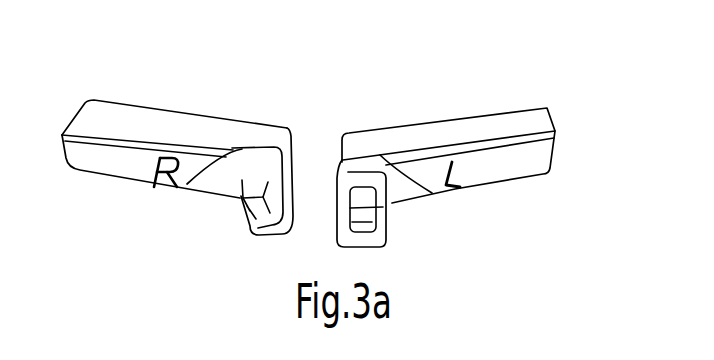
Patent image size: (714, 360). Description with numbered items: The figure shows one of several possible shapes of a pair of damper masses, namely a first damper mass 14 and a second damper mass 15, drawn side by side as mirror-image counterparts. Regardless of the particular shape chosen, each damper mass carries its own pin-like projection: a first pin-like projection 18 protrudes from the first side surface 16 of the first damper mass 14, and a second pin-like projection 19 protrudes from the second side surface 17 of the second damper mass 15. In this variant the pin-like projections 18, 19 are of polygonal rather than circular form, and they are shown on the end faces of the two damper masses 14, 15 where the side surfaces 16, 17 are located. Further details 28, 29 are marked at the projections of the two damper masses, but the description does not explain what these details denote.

The first damper mass 14 is at (488, 127).
The second damper mass 15 is at (130, 118).
The first side surface 16 is at (375, 166).
The second side surface 17 is at (238, 163).
The first pin-like projection 18 is at (363, 197).
The second pin-like projection 19 is at (240, 202).
The latching element of left housing part 28 is at (363, 222).
The latching element of right housing part 29 is at (243, 220).